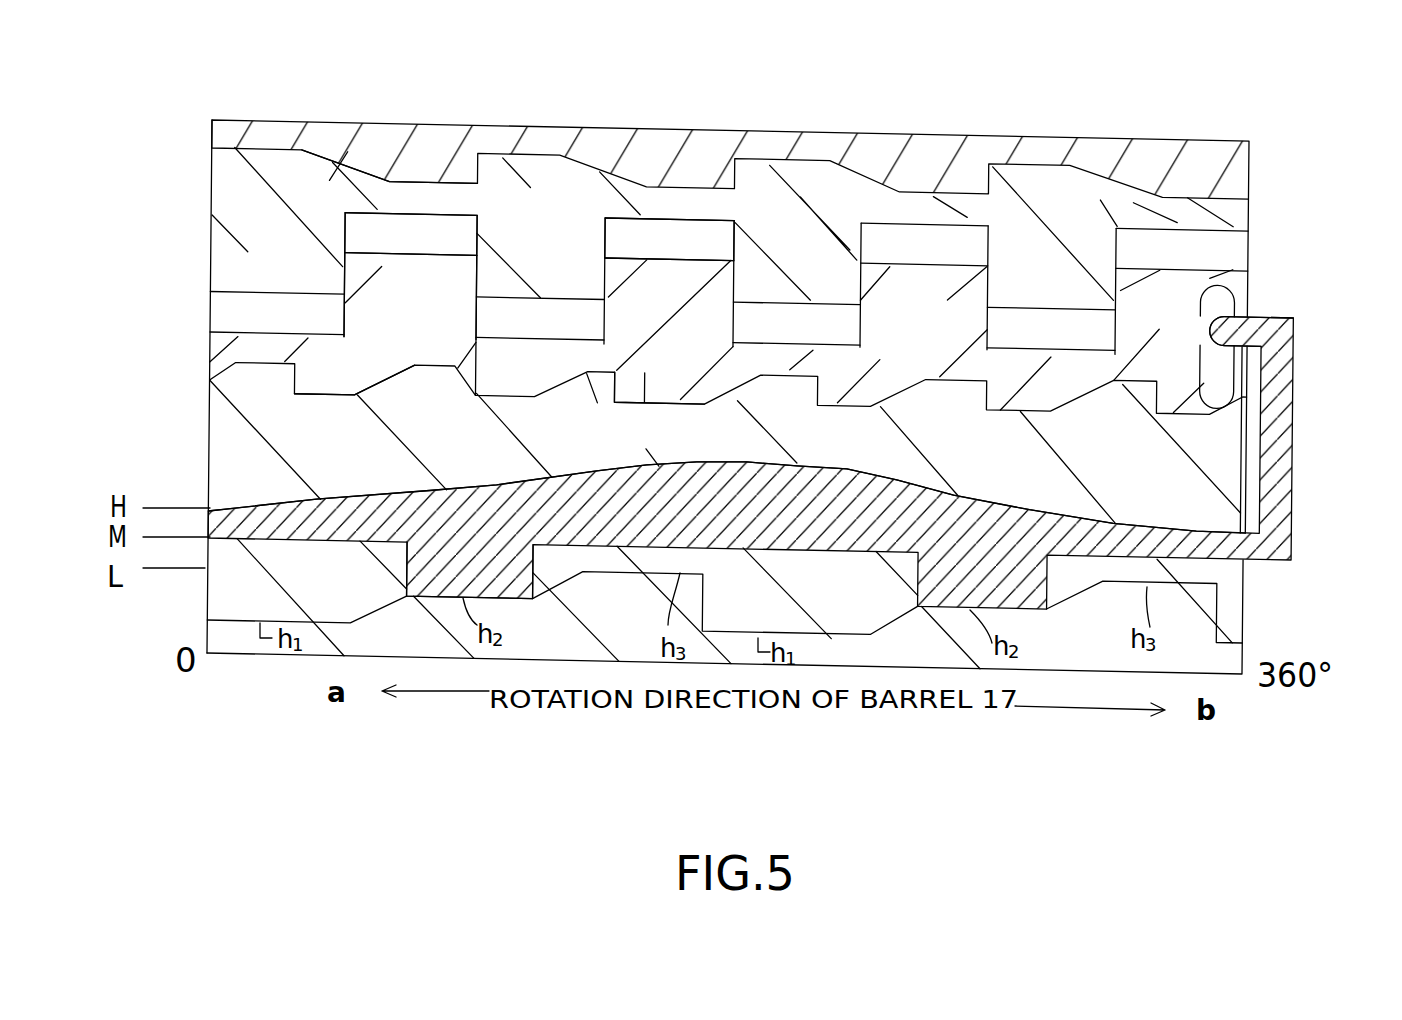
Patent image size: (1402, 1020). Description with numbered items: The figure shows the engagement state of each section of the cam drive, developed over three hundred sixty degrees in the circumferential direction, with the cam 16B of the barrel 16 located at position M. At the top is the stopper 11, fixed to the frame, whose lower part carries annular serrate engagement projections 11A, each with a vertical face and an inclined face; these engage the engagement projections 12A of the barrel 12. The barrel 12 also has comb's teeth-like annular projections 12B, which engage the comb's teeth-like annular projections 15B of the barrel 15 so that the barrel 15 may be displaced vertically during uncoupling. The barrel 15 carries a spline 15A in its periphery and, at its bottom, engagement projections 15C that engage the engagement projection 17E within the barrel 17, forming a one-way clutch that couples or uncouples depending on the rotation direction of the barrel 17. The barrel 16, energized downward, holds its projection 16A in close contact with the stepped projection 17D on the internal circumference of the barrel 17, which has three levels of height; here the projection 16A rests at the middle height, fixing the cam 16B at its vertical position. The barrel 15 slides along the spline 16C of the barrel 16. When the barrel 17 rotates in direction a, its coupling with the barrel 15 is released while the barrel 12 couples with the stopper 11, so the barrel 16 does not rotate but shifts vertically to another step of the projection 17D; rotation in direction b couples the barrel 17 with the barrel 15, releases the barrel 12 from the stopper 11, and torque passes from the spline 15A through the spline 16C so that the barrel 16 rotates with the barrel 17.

The stopper 11 is at (223, 137).
The engagement projections 11A is at (402, 184).
The barrel 12 is at (225, 208).
The engagement projections 12A is at (600, 263).
The comb's teeth-like annular projections 12B is at (260, 293).
The barrel 15 is at (223, 358).
The spline 15A is at (1243, 258).
The comb's teeth-like annular projections 15B is at (477, 267).
The engagement projections 15C is at (413, 330).
The barrel 16 is at (1293, 413).
The projection 16A is at (457, 590).
The cam 16B is at (813, 460).
The spline 16C is at (1273, 318).
The barrel 17 is at (225, 452).
The projection 17D is at (627, 573).
The engagement projection 17E is at (647, 445).